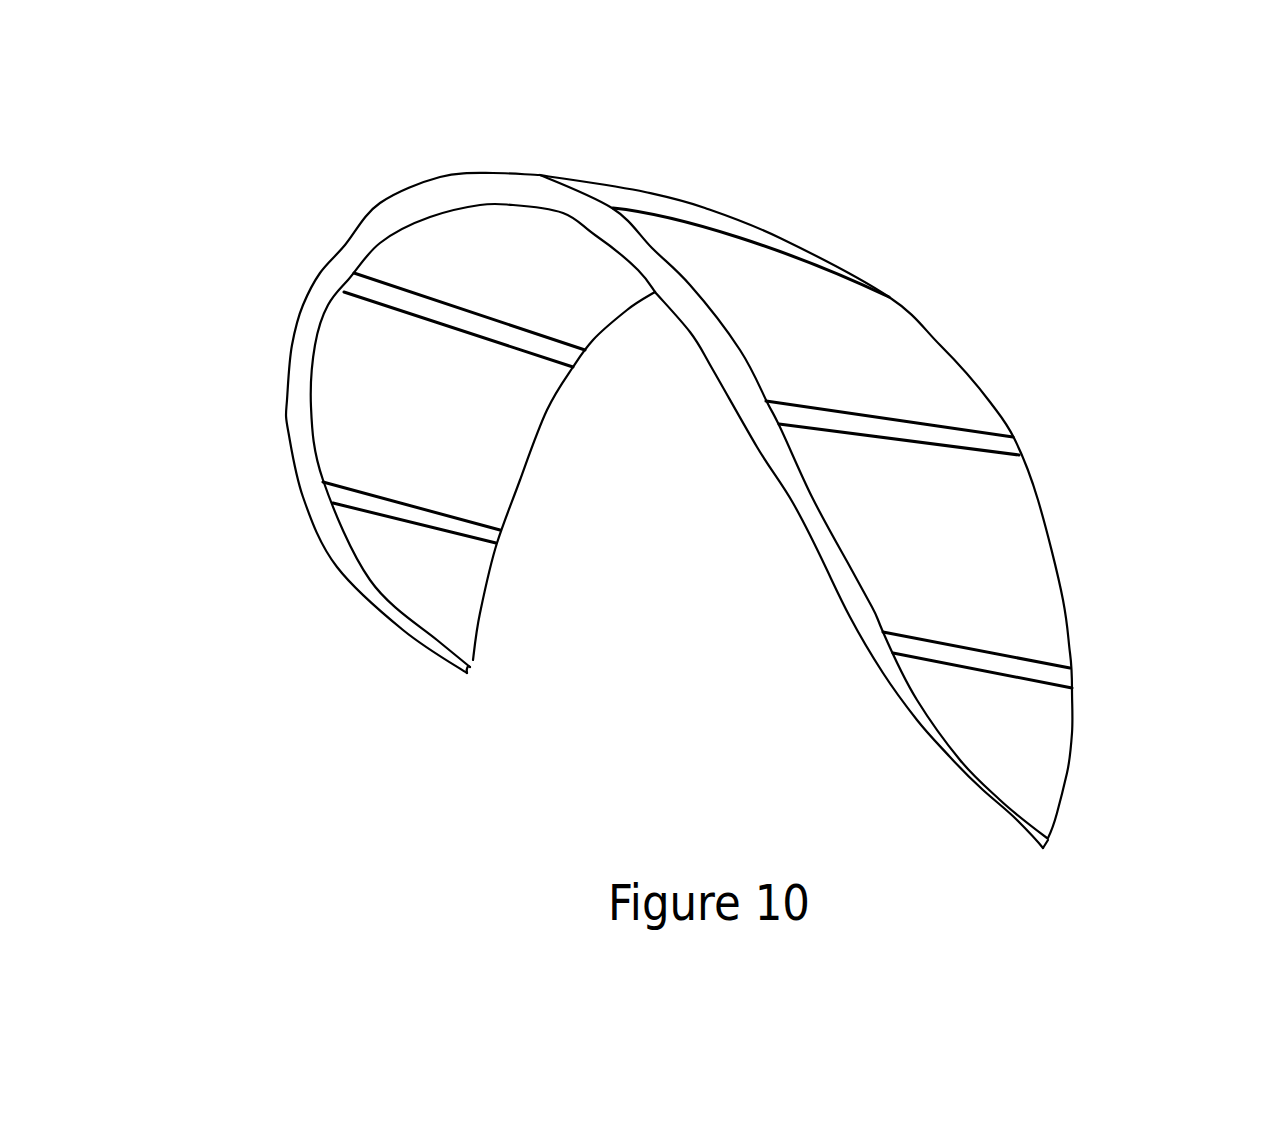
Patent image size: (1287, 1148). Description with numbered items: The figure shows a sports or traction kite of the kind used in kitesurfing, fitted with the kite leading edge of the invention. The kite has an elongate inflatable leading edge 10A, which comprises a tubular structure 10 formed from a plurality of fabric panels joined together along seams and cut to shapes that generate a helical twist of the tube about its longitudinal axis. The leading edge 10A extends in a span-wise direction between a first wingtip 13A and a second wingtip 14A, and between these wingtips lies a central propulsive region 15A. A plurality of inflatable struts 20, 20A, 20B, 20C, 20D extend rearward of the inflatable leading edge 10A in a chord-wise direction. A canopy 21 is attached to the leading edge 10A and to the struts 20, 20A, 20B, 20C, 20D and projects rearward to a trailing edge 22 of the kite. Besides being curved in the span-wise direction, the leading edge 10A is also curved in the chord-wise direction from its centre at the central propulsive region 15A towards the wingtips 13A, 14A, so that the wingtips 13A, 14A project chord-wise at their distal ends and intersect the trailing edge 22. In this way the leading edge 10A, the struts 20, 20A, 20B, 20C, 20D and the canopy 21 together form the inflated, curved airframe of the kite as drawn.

The tubular structure 10 is at (977, 143).
The inflatable leading edge 10A is at (808, 512).
The first wingtip 13A is at (1044, 848).
The second wingtip 14A is at (470, 673).
The central propulsive region 15A is at (492, 193).
The inflatable strut 20 is at (693, 220).
The inflatable strut 20A is at (917, 432).
The inflatable strut 20B is at (993, 667).
The inflatable strut 20C is at (417, 302).
The inflatable strut 20D is at (380, 508).
The canopy 21 is at (830, 342).
The trailing edge 22 is at (1046, 524).